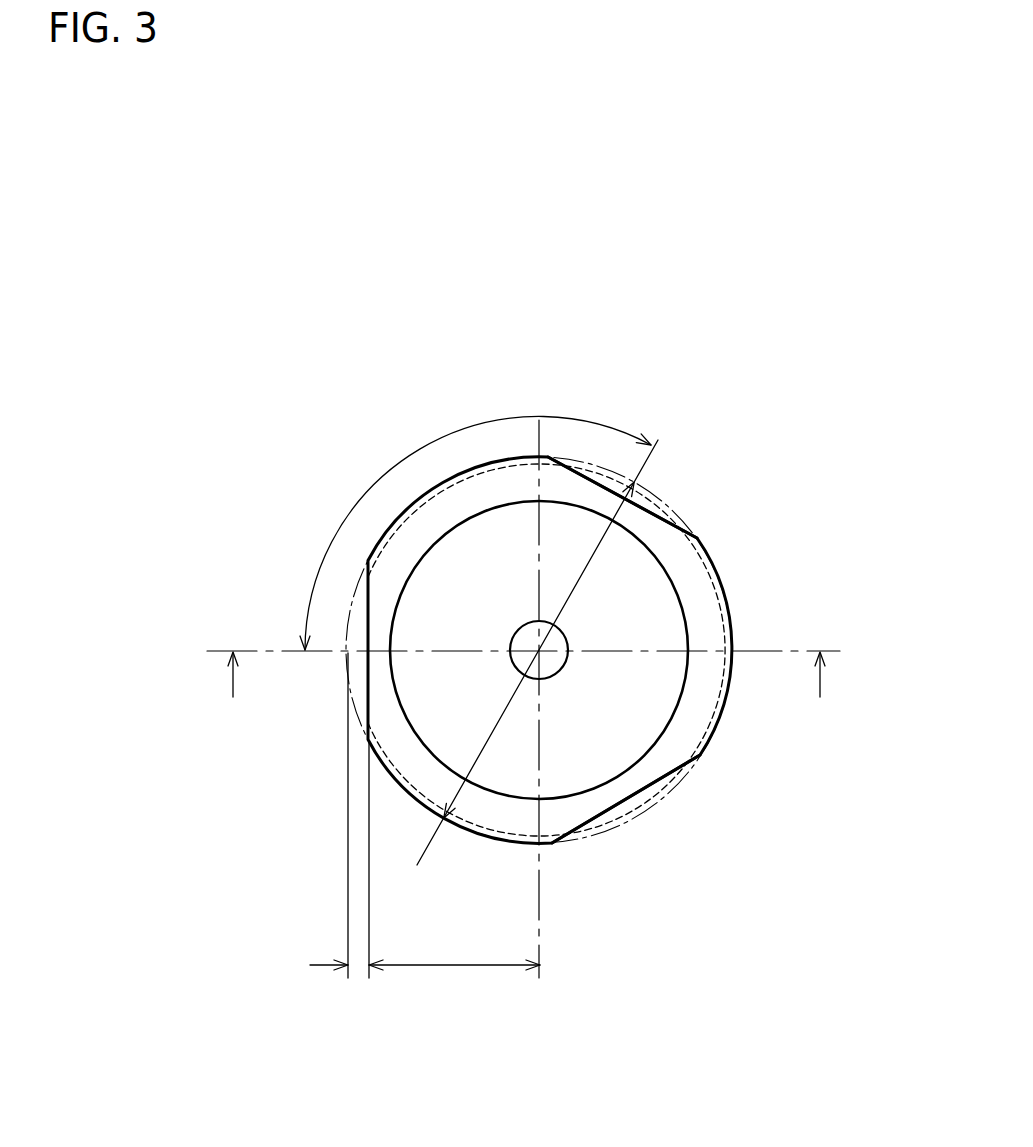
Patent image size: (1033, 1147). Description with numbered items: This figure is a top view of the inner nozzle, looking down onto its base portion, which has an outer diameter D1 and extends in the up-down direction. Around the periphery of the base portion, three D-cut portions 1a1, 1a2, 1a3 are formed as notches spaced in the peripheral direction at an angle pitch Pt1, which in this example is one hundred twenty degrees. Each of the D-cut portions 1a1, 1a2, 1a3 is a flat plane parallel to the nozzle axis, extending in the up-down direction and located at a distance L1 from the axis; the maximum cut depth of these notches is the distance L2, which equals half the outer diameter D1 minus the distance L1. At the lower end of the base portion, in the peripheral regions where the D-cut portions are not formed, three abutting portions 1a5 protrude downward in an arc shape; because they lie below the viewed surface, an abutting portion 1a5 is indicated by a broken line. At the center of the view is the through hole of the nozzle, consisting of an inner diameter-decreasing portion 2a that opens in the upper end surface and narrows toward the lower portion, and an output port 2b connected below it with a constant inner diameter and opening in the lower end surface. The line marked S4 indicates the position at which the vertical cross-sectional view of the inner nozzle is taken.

The D-cut portion 1a1 is at (367, 690).
The D-cut portion 1a2 is at (655, 512).
The D-cut portion 1a3 is at (623, 803).
The abutting portion 1a5 is at (455, 488).
The inner diameter-decreasing portion 2a is at (668, 715).
The output port 2b is at (552, 658).
The angle pitch Pt1 is at (475, 533).
The outer diameter D1 is at (528, 668).
The distance L1 is at (454, 951).
The distance L2 is at (317, 951).
The cross-section position S4 is at (526, 691).